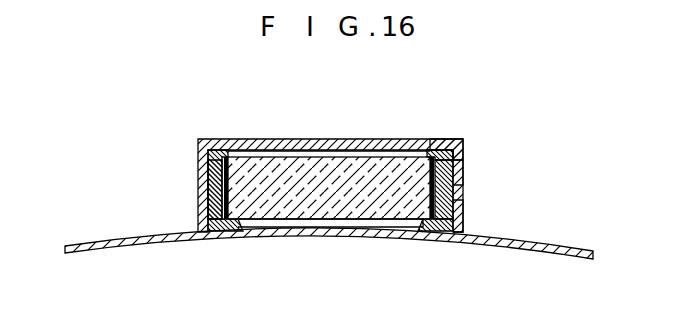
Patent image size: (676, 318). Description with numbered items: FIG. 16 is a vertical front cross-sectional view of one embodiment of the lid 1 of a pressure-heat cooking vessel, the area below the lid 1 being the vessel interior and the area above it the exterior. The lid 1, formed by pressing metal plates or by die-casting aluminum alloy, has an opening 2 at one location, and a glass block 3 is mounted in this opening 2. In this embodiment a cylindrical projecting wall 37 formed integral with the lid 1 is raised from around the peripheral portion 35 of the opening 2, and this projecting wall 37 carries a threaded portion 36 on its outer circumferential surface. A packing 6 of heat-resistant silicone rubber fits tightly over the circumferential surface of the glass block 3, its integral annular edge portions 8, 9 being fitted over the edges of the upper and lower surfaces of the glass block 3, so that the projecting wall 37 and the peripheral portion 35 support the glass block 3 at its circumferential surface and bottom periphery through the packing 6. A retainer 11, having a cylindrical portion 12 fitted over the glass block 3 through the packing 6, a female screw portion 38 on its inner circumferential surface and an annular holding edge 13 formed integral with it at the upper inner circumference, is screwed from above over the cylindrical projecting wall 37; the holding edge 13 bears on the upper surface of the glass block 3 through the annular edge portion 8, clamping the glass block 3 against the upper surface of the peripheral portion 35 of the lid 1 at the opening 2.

The lid 1 is at (565, 243).
The opening 2 is at (336, 228).
The glass block 3 is at (340, 160).
The packing 6 is at (463, 213).
The annular edge portion 8 is at (424, 153).
The annular edge portion 9 is at (430, 233).
The retainer 11 is at (463, 169).
The cylindrical portion 12 is at (198, 165).
The annular holding edge 13 is at (217, 150).
The peripheral portion 35 is at (228, 233).
The threaded portion 36 is at (198, 199).
The cylindrical projecting wall 37 is at (461, 148).
The female screw portion 38 is at (463, 197).